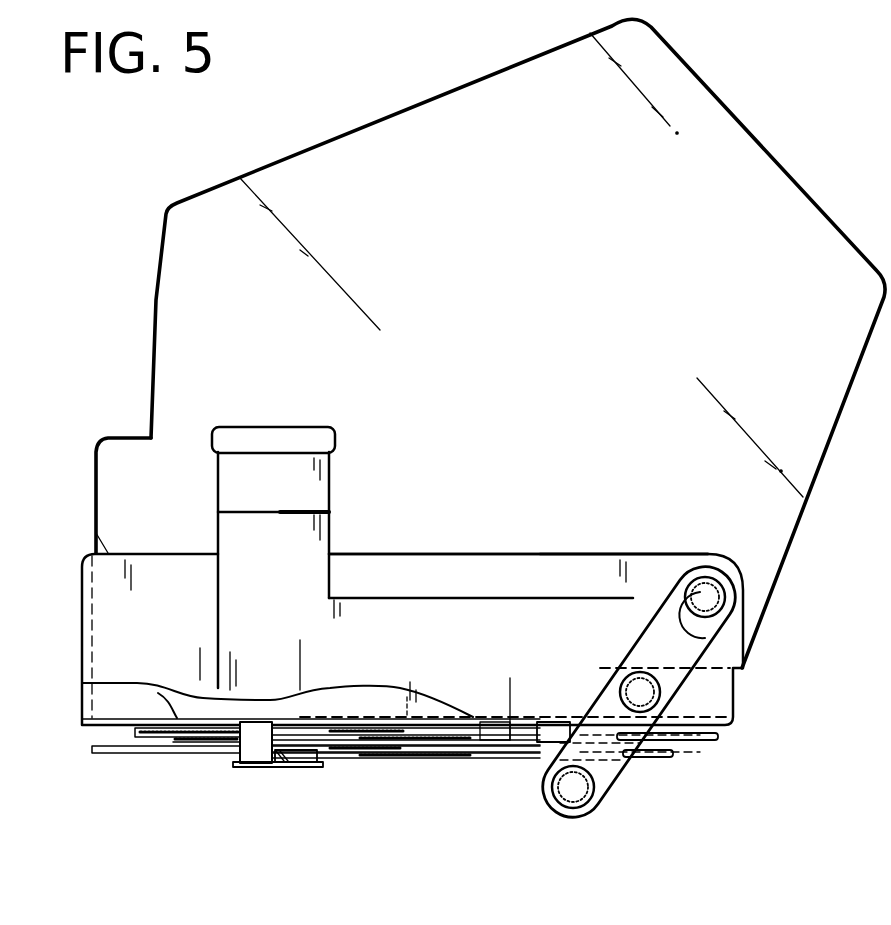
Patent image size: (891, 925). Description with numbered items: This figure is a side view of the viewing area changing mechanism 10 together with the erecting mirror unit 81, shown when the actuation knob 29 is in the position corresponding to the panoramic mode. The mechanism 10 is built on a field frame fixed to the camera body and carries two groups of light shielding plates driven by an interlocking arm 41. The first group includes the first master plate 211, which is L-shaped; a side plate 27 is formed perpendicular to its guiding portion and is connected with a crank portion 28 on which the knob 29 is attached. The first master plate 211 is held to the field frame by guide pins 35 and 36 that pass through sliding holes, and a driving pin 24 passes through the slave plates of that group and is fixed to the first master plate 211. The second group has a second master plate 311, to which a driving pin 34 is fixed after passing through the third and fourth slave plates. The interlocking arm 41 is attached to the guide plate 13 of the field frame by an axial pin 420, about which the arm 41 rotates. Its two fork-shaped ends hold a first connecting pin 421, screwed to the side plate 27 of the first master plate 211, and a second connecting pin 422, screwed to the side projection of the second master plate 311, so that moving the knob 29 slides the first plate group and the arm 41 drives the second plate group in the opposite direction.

The viewing area changing mechanism 10 is at (168, 552).
The guide plate 13 is at (567, 560).
The driving pin 24 is at (497, 760).
The side plate 27 is at (430, 603).
The crank portion 28 is at (317, 485).
The actuation knob 29 is at (270, 437).
The driving pin 34 is at (308, 755).
The guide pin 35 is at (257, 753).
The guide pin 36 is at (553, 730).
The interlocking arm 41 is at (652, 650).
The erecting mirror unit 81 is at (784, 192).
The first master plate 211 is at (217, 637).
The second master plate 311 is at (148, 753).
The axial pin 420 is at (642, 692).
The first connecting pin 421 is at (707, 593).
The second connecting pin 422 is at (560, 808).